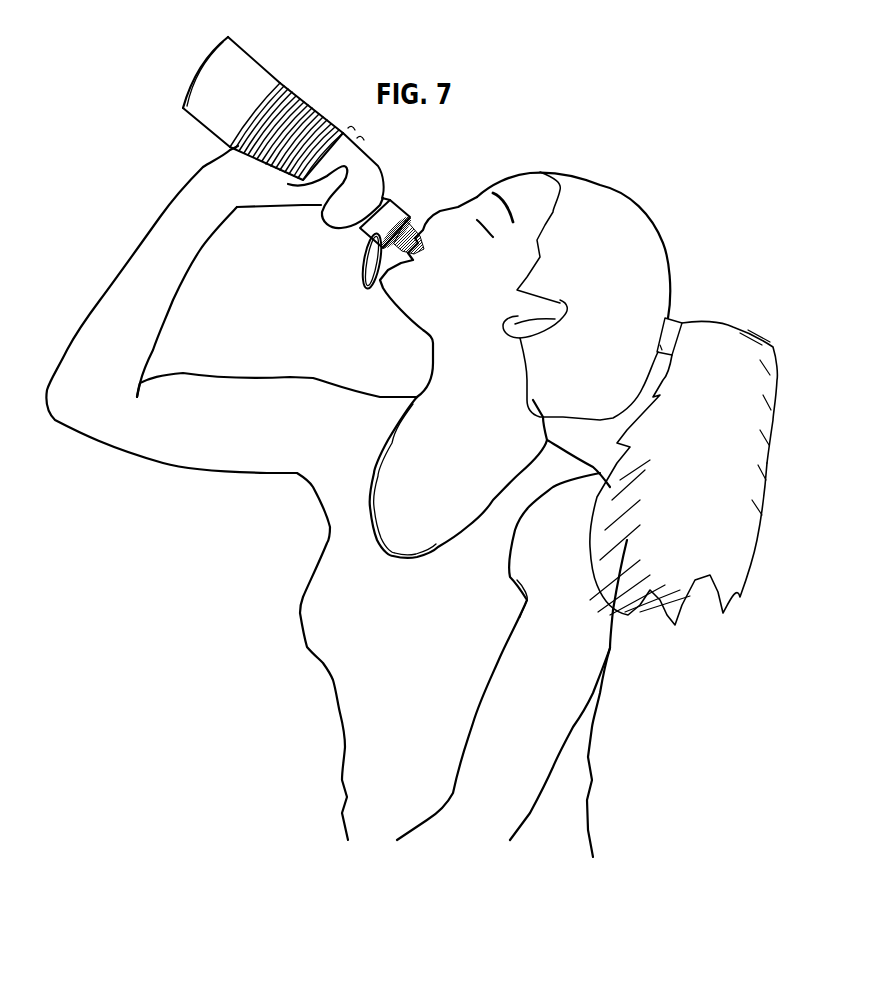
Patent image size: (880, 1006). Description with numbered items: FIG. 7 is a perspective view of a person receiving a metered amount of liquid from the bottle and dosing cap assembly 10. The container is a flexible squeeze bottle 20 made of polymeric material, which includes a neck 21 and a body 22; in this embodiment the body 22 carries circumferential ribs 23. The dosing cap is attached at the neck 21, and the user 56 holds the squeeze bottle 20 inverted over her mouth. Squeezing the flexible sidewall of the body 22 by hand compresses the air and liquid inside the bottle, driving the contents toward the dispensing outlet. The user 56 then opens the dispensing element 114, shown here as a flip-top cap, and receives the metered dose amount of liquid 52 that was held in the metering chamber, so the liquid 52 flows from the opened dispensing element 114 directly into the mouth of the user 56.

The drinking lid assembly 10 is at (381, 220).
The squeeze bottle 20 is at (286, 106).
The neck 21 is at (381, 197).
The body 22 is at (253, 44).
The circumferential ribs 23 is at (297, 92).
The liquid 52 is at (408, 250).
The user 56 is at (389, 355).
The dispensing element 114 is at (352, 248).